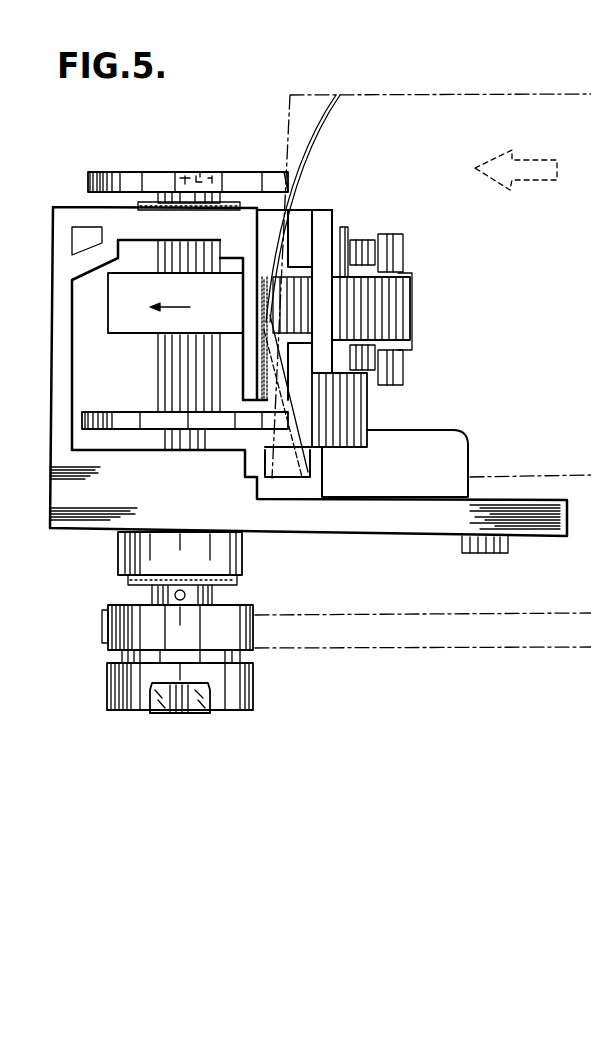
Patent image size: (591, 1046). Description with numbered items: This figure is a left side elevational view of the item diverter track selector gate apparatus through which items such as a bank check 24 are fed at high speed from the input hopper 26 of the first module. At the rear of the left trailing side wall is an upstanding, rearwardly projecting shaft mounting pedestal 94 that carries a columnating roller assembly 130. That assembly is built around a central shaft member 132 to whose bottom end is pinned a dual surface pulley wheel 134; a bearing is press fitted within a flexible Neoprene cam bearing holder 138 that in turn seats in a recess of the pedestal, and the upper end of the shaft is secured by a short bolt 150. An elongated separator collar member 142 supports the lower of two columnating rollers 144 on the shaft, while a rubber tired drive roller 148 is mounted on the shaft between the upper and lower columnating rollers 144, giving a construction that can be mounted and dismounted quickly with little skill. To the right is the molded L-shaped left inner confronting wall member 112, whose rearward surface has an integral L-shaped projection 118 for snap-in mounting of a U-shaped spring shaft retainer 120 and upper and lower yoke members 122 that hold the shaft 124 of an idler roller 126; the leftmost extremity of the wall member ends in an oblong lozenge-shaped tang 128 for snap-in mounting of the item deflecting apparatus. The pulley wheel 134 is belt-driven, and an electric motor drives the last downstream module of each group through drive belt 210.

The bank check 24 is at (412, 138).
The input hopper 26 is at (8, 221).
The shaft mounting pedestal 94 is at (53, 322).
The left inner confronting wall member 112 is at (297, 232).
The L-shaped projection 118 is at (413, 292).
The U-shaped spring shaft retainer 120 is at (403, 255).
The yoke members 122 is at (352, 252).
The shaft 124 is at (350, 243).
The idler roller 126 is at (413, 322).
The tang 128 is at (403, 413).
The columnating roller assembly 130 is at (113, 170).
The central shaft member 132 is at (178, 697).
The dual surface pulley wheel 134 is at (110, 652).
The flexible Neoprene cam bearing holder 138 is at (138, 203).
The separator collar member 142 is at (187, 450).
The columnating rollers 144 is at (155, 172).
The rubber tired drive roller 148 is at (125, 333).
The short bolt 150 is at (185, 172).
The drive belt 210 is at (373, 650).